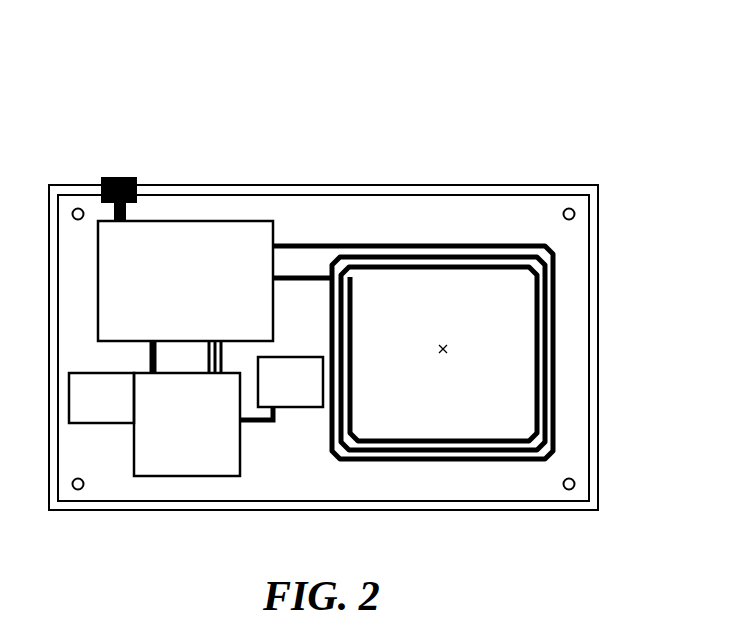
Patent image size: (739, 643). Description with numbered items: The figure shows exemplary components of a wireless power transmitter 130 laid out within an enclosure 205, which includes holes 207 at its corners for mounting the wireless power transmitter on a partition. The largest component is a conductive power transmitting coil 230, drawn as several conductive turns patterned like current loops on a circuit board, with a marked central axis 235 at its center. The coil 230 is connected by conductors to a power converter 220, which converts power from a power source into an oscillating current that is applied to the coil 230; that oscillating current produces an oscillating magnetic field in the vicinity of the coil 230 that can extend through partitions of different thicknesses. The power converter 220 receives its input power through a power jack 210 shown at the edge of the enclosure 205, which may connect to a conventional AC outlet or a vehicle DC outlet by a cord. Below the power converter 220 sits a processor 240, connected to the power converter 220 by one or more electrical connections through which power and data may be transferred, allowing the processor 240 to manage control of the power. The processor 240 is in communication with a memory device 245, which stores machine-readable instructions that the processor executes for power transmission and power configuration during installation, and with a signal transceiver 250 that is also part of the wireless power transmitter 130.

The wireless power transmitter 130 is at (172, 106).
The enclosure 205 is at (375, 185).
The holes 207 is at (570, 207).
The power jack 210 is at (118, 176).
The power converter 220 is at (200, 290).
The conductive power transmitting coil 230 is at (345, 464).
The central axis 235 is at (446, 354).
The processor 240 is at (204, 433).
The memory device 245 is at (118, 404).
The signal transceiver 250 is at (308, 389).